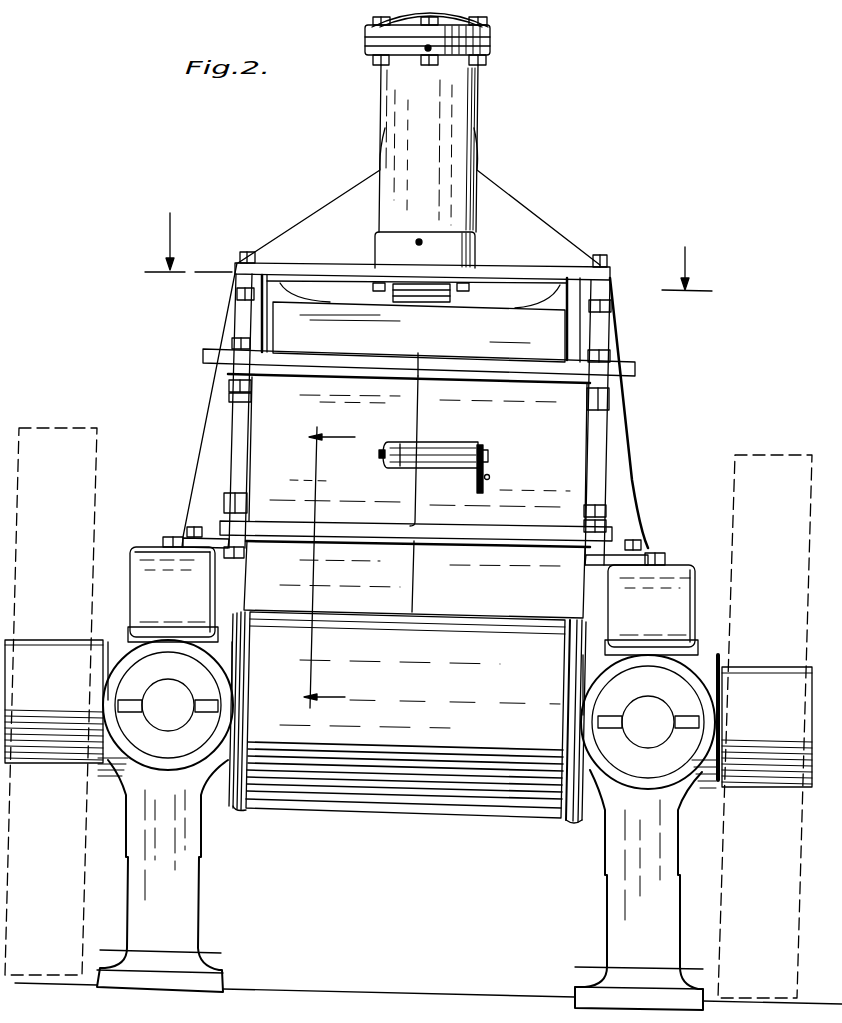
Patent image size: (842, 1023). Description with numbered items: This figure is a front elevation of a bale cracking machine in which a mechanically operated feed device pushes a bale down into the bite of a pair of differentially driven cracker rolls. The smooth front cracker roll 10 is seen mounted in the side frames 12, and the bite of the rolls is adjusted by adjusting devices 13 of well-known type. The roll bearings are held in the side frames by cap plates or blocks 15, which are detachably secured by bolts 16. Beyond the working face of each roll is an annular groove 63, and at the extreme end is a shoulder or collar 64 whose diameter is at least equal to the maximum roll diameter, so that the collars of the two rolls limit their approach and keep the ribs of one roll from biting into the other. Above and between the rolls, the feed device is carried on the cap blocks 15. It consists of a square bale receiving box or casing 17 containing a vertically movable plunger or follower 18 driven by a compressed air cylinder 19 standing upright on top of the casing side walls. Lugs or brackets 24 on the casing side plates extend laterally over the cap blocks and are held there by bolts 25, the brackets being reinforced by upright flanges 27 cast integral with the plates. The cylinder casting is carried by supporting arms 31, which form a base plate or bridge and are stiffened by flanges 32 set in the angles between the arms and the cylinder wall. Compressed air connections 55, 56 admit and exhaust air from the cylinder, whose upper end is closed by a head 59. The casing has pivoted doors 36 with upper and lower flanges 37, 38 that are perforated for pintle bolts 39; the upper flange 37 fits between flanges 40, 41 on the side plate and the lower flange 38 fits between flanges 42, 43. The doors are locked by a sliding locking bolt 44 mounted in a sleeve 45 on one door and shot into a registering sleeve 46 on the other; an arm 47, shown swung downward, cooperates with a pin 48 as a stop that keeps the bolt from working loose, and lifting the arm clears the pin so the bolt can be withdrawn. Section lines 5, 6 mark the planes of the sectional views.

The section line 5- 5 is at (428, 252).
The section line 6- 6 is at (336, 568).
The front cracker roll 10 is at (397, 715).
The side frames 12 is at (400, 885).
The adjusting devices 13 is at (167, 695).
The cap plates or blocks 15 is at (413, 601).
The bolts 16 is at (666, 560).
The bale receiving box or casing 17 is at (211, 405).
The plunger or follower 18 is at (421, 318).
The compressed air cylinder 19 is at (462, 122).
The lugs or brackets 24 is at (190, 540).
The bolts 25 is at (645, 547).
The upright flanges 27 is at (622, 452).
The supporting arms 31 is at (510, 276).
The flanges 32 is at (520, 224).
The doors 36 is at (418, 451).
The upper flange 37 is at (540, 381).
The lower flange 38 is at (538, 526).
The pintle bolts 39 is at (618, 352).
The flange 40 is at (637, 370).
The flange 41 is at (606, 396).
The flange 42 is at (606, 522).
The flange 43 is at (590, 549).
The sliding locking bolt 44 is at (382, 454).
The sleeve 45 is at (436, 447).
The registering sleeve 46 is at (400, 445).
The arm 47 is at (476, 484).
The pin 48 is at (490, 478).
The compressed air connection 55 is at (424, 51).
The compressed air connection 56 is at (416, 240).
The head 59 is at (485, 23).
The annular groove 63 is at (566, 822).
The shoulder or collar 64 is at (579, 824).